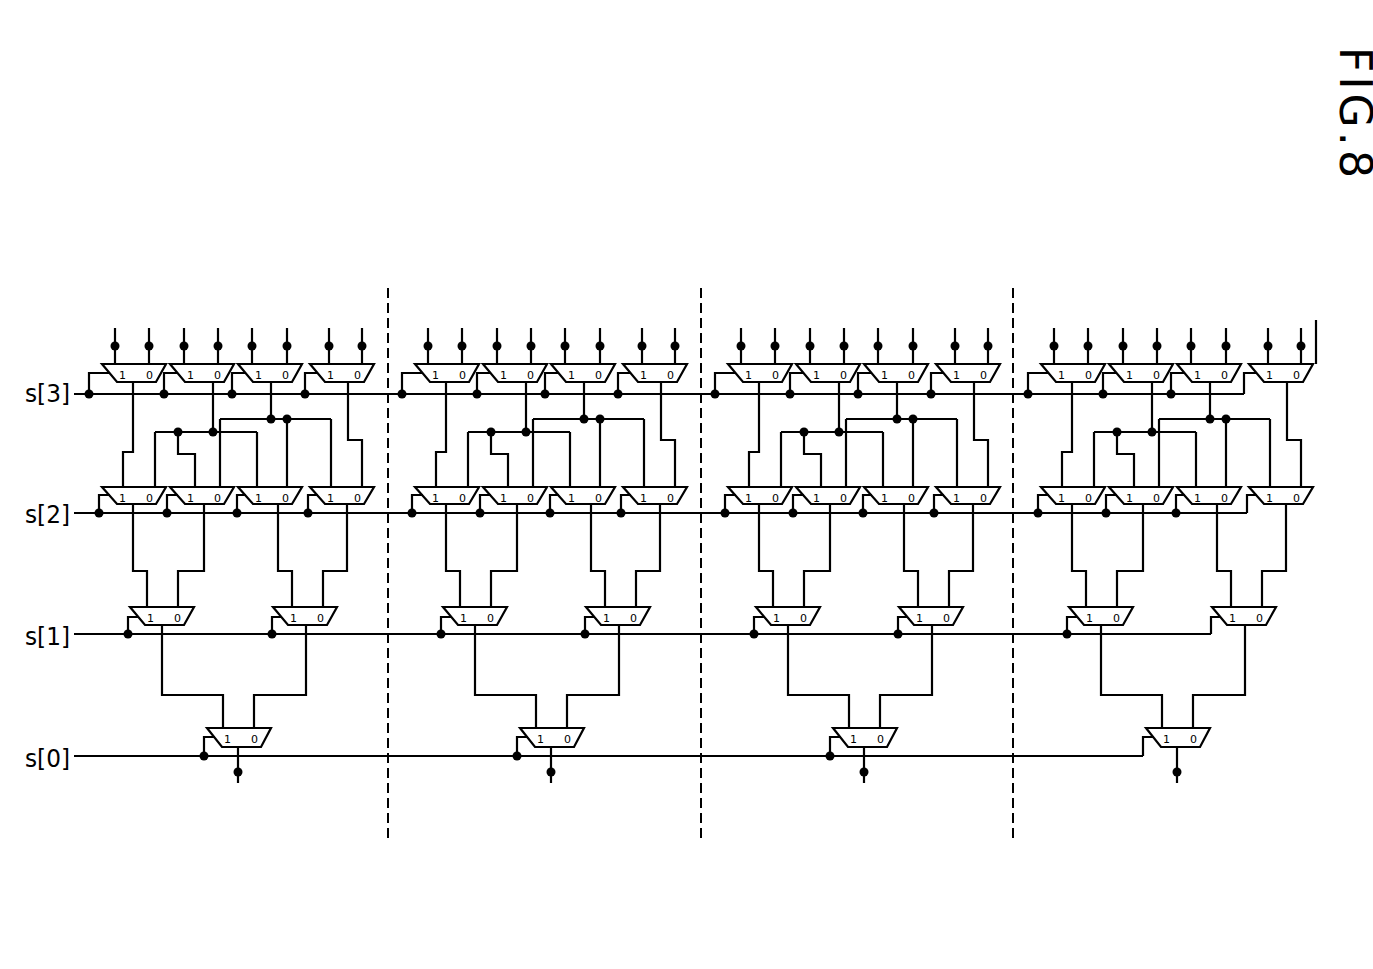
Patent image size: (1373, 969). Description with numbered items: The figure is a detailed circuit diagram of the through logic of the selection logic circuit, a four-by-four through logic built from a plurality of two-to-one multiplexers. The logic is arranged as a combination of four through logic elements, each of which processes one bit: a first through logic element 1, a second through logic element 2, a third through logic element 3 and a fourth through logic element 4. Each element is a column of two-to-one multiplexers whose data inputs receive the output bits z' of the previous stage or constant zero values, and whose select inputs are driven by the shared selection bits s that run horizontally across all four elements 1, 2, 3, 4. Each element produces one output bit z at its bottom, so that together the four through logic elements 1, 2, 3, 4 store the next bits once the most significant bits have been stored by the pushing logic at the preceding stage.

The 1st Through Logic element 1 is at (220, 587).
The 2nd Through Logic element 2 is at (548, 587).
The 3rd Through Logic element 3 is at (856, 587).
The 4th Through Logic element 4 is at (1173, 587).